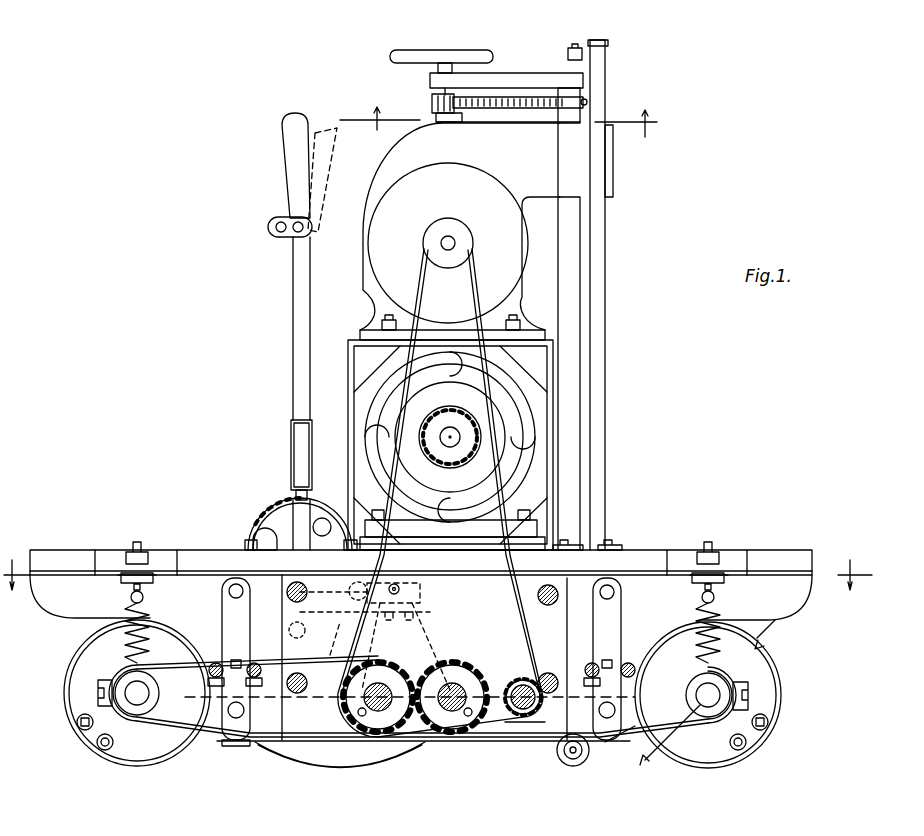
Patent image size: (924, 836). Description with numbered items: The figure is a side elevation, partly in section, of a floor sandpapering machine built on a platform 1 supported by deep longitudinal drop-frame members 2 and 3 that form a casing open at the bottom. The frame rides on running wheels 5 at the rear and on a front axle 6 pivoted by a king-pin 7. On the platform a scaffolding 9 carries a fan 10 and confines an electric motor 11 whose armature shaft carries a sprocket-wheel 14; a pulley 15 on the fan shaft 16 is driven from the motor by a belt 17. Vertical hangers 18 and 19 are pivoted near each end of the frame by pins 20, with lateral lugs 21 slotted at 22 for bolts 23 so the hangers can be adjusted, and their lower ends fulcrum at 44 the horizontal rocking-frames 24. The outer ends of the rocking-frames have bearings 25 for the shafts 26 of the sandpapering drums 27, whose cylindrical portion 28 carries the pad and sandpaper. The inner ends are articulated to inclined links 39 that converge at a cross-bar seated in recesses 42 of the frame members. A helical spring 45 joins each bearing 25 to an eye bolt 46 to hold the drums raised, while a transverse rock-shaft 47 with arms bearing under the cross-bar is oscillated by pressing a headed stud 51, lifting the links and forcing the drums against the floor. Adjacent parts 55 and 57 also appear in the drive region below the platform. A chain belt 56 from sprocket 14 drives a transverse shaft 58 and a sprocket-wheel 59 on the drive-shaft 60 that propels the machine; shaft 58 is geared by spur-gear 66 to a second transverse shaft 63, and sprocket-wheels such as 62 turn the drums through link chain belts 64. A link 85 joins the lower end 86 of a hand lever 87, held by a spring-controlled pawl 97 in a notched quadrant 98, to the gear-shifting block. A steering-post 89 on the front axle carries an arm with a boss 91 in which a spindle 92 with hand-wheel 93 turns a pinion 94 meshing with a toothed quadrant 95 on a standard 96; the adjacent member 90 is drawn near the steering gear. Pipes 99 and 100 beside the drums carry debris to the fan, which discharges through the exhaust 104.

The platform 1 is at (596, 549).
The longitudinal drop-frame member 2 is at (441, 567).
The longitudinal drop-frame member 3 is at (562, 645).
The running wheels 5 is at (325, 745).
The front axle 6 is at (580, 755).
The king-pin 7 is at (511, 122).
The scaffolding 9 is at (540, 372).
The fan 10 is at (600, 228).
The electric motor 11 is at (532, 440).
The sprocket-wheel 14 is at (452, 460).
The pulley 15 is at (466, 240).
The shaft 16 is at (450, 236).
The belt 17 is at (490, 286).
The hanger 18 is at (236, 624).
The hanger 19 is at (612, 620).
The pins 20 is at (215, 575).
The lateral lugs 21 is at (214, 662).
The slots 22 is at (236, 660).
The bolts 23 is at (404, 688).
The horizontal rocking-frame 24 is at (200, 755).
The bearings 25 is at (98, 696).
The shaft 26 is at (160, 690).
The sandpapering drum 27 is at (85, 668).
The cylindrical portion 28 is at (140, 717).
The links 39 is at (462, 626).
The recesses 42 is at (420, 597).
The fulcrum 44 is at (250, 742).
The helical spring 45 is at (146, 606).
The eye bolt 46 is at (135, 550).
The transverse rock-shaft 47 is at (312, 590).
The stud 51 is at (262, 530).
The pivot pin 55 is at (545, 620).
The chain belt 56 is at (508, 512).
The gear 57 is at (390, 737).
The transverse shaft 58 is at (376, 688).
The sprocket-wheel 59 is at (516, 724).
The transverse drive-shaft 60 is at (520, 680).
The sprocket-wheel 62 is at (392, 668).
The transverse shaft 63 is at (455, 737).
The link chain belts 64 is at (150, 628).
The spur-gear 66 is at (301, 524).
The link 85 is at (365, 622).
The lower end of hand lever 86 is at (299, 643).
The hand lever 87 is at (298, 380).
The vertical steering-post 89 is at (566, 300).
The top plate 90 is at (512, 73).
The boss 91 is at (455, 75).
The spindle 92 is at (436, 68).
The hand-wheel 93 is at (400, 50).
The pinion 94 is at (432, 103).
The toothed quadrant 95 is at (520, 100).
The standard 96 is at (606, 100).
The spring-controlled pawl 97 is at (292, 490).
The quadrant 98 is at (312, 498).
The pipe 99 is at (236, 748).
The pipe 100 is at (612, 745).
The exhaust 104 is at (616, 172).